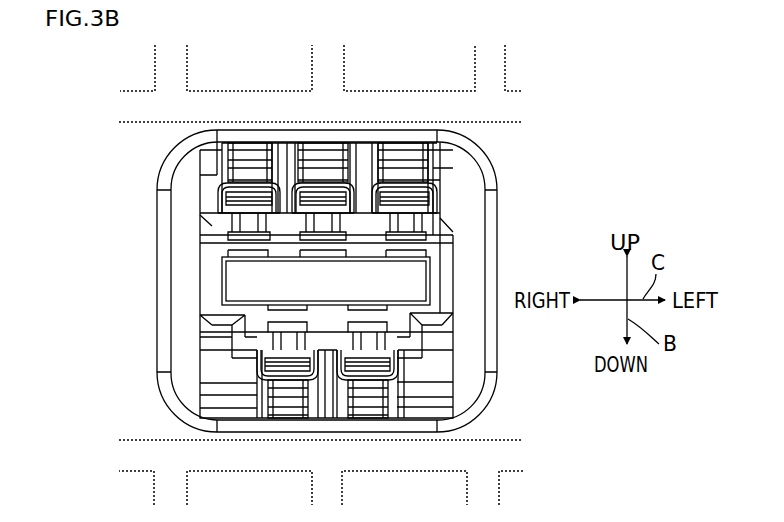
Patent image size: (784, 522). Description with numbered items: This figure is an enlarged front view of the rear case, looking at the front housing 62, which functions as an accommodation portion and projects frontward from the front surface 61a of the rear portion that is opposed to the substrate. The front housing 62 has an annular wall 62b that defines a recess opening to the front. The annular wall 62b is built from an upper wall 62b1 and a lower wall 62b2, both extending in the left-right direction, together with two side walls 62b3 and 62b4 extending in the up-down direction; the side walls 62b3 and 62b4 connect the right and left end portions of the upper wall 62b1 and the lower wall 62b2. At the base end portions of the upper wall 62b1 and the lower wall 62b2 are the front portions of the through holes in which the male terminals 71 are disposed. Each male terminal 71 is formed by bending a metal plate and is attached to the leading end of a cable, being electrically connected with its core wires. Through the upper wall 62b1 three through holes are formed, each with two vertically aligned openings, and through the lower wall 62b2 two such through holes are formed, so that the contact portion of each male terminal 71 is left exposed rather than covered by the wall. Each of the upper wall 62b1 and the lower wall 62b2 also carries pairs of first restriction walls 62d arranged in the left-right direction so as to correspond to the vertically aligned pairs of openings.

The male terminal 71 is at (311, 181).
The front surface 61a is at (507, 152).
The front housing 62 is at (181, 257).
The annular wall 62b is at (193, 240).
The upper wall 62b1 is at (408, 246).
The lower wall 62b2 is at (396, 319).
The side wall 62b3 is at (220, 275).
The side wall 62b4 is at (436, 283).
The first restriction walls 62d is at (237, 241).